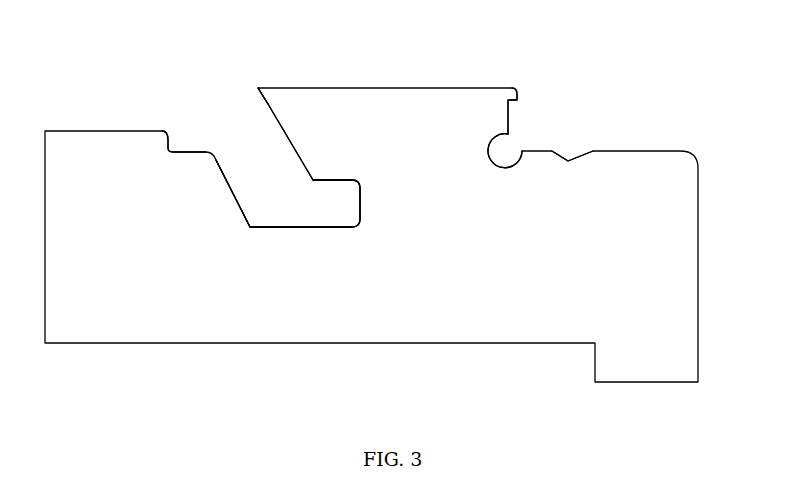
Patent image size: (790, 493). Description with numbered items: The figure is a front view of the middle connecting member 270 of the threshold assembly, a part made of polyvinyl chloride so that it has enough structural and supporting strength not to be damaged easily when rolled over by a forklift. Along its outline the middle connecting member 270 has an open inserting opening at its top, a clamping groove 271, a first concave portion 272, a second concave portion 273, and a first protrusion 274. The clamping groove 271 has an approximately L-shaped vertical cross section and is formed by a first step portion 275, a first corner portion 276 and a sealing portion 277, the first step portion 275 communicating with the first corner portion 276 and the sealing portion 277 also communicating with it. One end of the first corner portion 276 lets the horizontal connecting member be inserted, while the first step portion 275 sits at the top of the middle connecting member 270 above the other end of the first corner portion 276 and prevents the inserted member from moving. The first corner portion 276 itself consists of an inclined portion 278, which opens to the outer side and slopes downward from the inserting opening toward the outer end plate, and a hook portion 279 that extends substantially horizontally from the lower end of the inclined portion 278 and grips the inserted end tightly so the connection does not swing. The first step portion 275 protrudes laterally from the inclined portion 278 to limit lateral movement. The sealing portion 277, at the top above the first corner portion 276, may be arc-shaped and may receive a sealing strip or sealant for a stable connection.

The middle connecting member 270 is at (142, 50).
The clamping groove 271 is at (225, 97).
The first concave portion 272 is at (514, 147).
The second concave portion 273 is at (575, 157).
The first protrusion 274 is at (508, 85).
The first step portion 275 is at (190, 142).
The first corner portion 276 is at (398, 284).
The sealing portion 277 is at (258, 102).
The inclined portion 278 is at (238, 189).
The hook portion 279 is at (287, 210).